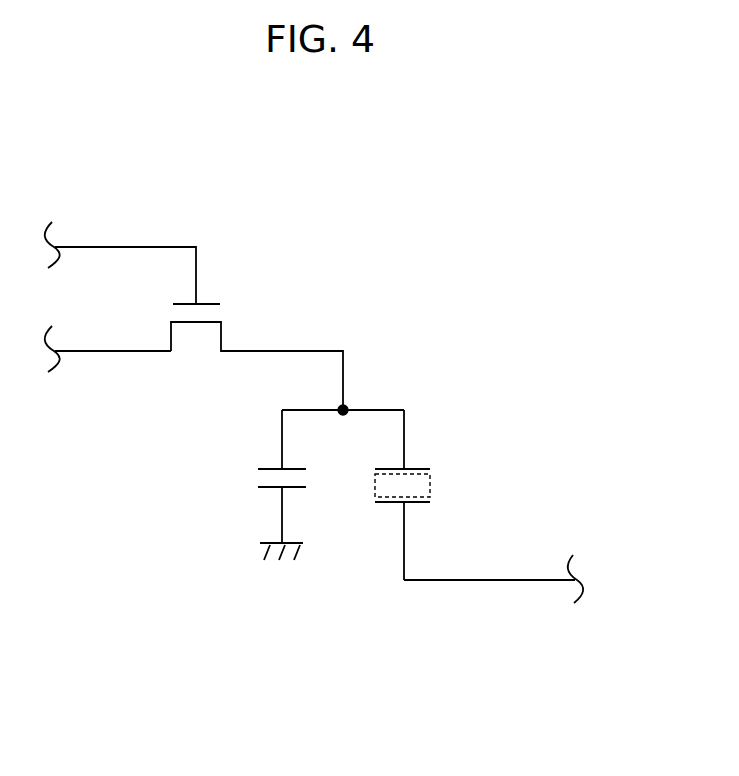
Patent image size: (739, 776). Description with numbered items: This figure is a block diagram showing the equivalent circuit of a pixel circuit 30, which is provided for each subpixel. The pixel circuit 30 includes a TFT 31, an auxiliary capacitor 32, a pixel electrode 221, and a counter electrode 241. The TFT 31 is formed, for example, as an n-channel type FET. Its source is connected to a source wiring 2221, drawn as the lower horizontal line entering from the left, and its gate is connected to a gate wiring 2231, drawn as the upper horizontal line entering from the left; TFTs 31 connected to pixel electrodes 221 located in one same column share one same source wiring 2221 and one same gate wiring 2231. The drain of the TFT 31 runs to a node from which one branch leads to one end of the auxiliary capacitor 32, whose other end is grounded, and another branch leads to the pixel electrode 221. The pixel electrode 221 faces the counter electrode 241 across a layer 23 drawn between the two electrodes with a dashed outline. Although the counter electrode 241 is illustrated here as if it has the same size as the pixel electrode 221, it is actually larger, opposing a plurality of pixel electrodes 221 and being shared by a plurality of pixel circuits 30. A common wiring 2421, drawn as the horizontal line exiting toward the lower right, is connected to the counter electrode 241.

The gate wiring 2231 is at (123, 247).
The source wiring 2221 is at (123, 351).
The TFT 31 is at (220, 338).
The auxiliary capacitor 32 is at (258, 469).
The pixel electrode 221 is at (418, 469).
The liquid crystal layer 23 is at (422, 483).
The counter electrode 241 is at (418, 502).
The common wiring 2421 is at (462, 580).
The pixel circuit 30 is at (622, 753).